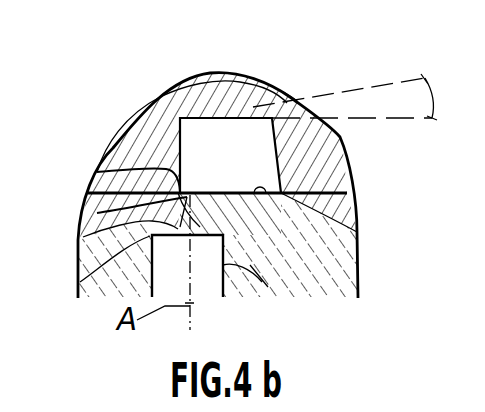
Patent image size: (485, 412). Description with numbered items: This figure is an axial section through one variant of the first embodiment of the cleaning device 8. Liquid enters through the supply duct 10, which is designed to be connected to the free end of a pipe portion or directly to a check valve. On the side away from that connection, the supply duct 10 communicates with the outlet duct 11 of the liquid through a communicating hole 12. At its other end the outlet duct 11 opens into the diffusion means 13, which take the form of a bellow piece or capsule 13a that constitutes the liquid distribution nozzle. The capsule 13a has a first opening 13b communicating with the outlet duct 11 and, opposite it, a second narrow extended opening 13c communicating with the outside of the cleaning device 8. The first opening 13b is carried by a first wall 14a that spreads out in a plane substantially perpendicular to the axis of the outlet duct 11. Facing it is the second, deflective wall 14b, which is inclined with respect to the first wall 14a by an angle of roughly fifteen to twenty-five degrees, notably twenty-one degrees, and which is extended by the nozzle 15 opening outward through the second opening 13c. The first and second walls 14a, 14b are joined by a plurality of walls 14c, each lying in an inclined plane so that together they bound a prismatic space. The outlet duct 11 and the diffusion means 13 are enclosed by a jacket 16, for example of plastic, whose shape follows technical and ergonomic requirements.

The cleaning device 8 is at (124, 102).
The supply duct 10 is at (256, 306).
The outlet duct 11 is at (97, 213).
The communicating hole 12 is at (83, 237).
The diffusion means 13 is at (298, 168).
The capsule 13a is at (244, 172).
The first opening 13b is at (97, 172).
The second opening 13c is at (312, 95).
The first wall 14a is at (357, 231).
The second wall 14b is at (228, 77).
The walls 14c is at (180, 135).
The nozzle 15 is at (291, 88).
The jacket 16 is at (80, 282).